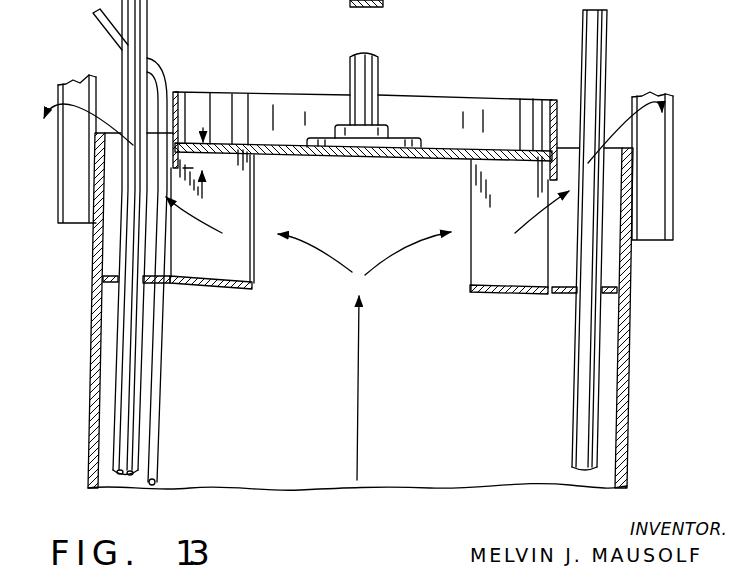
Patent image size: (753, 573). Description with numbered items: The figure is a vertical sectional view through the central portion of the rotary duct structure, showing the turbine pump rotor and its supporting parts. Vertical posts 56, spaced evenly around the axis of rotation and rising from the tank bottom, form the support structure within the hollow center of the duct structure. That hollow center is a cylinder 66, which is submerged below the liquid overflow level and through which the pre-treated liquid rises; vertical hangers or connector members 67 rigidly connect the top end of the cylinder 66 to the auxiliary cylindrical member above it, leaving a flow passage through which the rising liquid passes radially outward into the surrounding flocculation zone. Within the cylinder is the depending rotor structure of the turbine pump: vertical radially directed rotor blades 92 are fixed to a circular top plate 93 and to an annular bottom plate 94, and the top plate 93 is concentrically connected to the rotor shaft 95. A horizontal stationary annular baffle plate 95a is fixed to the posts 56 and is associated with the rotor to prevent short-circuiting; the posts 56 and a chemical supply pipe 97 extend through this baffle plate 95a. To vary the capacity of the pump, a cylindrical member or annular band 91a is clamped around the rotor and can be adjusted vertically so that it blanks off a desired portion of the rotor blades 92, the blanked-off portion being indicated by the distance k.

The posts 56 is at (147, 43).
The cylinder 66 is at (630, 355).
The vertical hangers or connector members 67 is at (58, 152).
The cylindrical member or annular band 91a is at (557, 132).
The rotor blades 92 is at (222, 266).
The circular top plate 93 is at (397, 160).
The annular bottom plate 94 is at (483, 293).
The rotor shaft 95 is at (378, 88).
The stationary annular baffle plate 95a is at (565, 294).
The chemical supply pipe 97 is at (157, 408).
The distance k is at (205, 165).